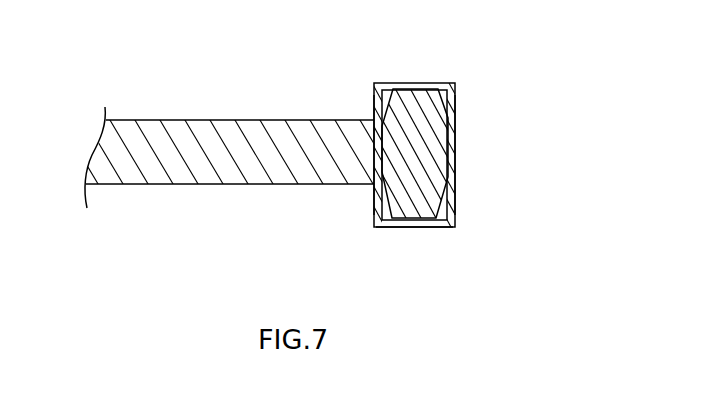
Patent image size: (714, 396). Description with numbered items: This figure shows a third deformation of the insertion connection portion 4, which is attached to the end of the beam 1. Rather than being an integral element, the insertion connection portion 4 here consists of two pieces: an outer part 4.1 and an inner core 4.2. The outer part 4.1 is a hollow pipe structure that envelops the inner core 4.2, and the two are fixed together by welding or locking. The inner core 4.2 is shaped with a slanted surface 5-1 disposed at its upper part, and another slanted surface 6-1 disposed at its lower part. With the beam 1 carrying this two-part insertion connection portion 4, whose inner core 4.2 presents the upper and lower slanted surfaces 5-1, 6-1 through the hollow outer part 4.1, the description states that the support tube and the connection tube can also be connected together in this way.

The beam 1 is at (190, 137).
The insertion connection portion 4 is at (441, 109).
The outer part 4.1 is at (449, 139).
The inner core 4.2 is at (428, 188).
The slanted surface 5-1 is at (448, 102).
The lower mounting frame 6-1 is at (448, 206).